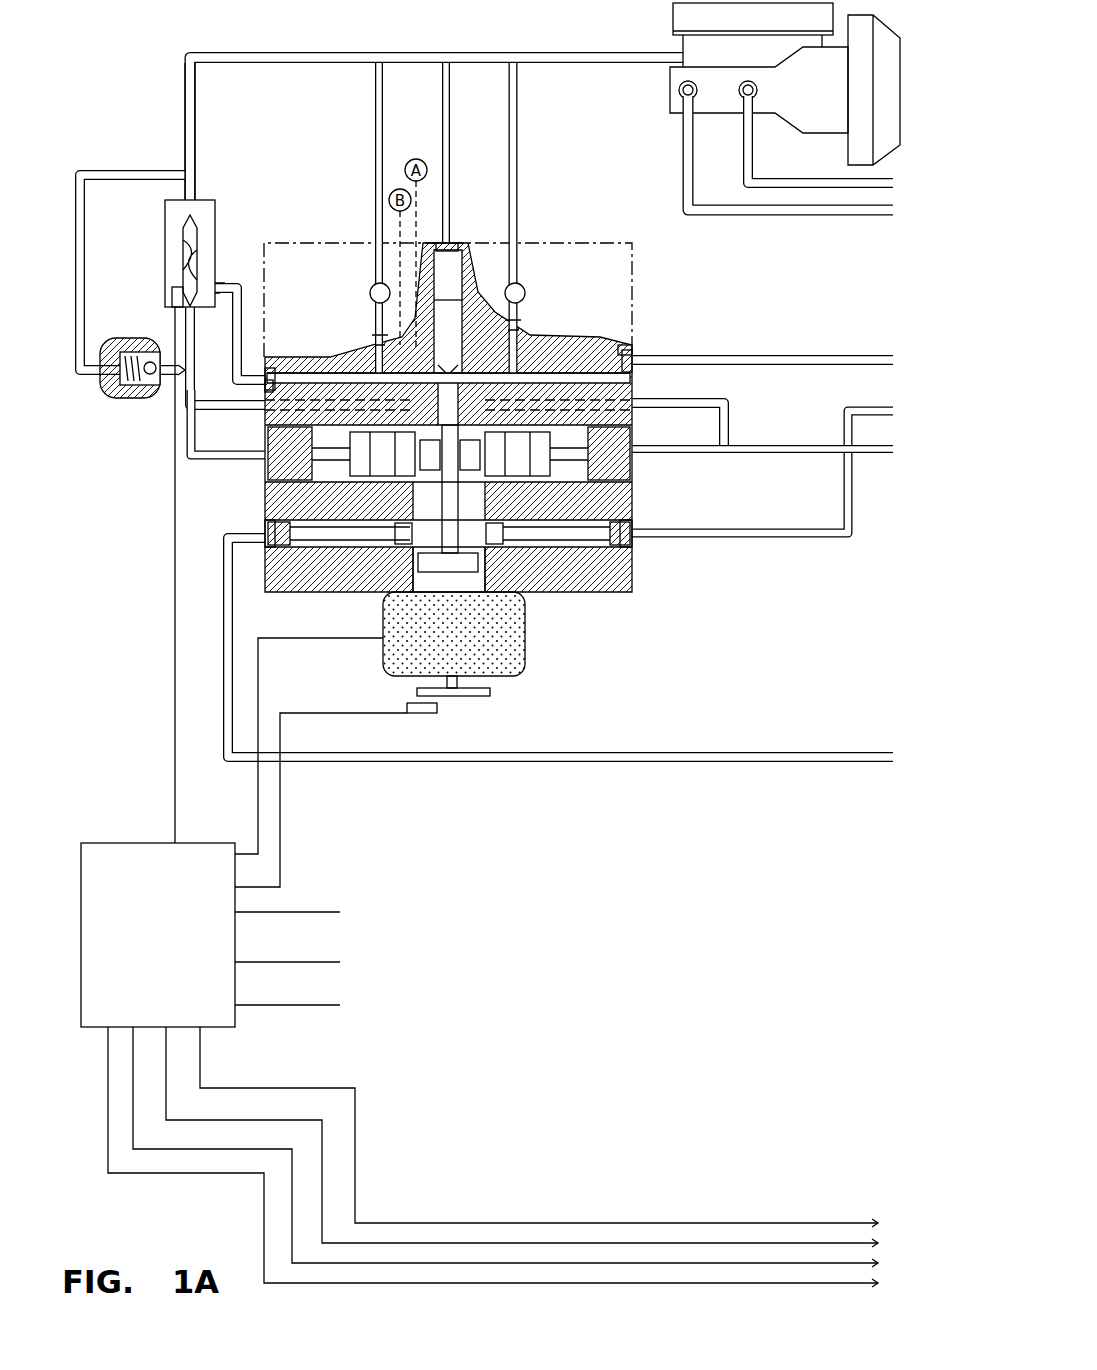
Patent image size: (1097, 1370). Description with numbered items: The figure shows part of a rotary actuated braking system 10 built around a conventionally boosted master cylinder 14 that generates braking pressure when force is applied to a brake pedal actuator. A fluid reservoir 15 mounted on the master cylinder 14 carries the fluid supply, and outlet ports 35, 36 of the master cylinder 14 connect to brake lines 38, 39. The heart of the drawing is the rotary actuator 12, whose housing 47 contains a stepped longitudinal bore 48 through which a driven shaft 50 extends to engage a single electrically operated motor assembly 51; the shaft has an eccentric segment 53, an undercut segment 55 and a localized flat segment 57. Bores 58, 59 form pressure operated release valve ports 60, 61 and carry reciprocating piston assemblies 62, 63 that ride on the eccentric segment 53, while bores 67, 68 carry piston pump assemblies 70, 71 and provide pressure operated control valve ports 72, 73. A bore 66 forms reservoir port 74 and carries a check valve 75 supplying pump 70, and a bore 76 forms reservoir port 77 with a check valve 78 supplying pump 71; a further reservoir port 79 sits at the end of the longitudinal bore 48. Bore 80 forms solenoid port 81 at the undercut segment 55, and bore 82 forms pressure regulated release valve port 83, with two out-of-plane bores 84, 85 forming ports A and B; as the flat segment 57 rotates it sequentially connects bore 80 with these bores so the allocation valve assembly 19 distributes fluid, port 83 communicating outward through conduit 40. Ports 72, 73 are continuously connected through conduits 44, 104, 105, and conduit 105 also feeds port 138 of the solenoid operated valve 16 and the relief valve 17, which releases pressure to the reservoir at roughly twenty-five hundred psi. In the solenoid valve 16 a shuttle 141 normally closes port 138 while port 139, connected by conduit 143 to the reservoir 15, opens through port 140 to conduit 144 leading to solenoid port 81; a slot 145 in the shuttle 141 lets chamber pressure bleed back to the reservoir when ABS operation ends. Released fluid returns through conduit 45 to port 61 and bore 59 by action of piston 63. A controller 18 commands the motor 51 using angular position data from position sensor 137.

The rotary actuated braking system 10 is at (138, 68).
The rotary actuator 12 is at (636, 594).
The master cylinder 14 is at (800, 107).
The fluid reservoir 15 is at (683, 20).
The solenoid operated valve 16 is at (215, 203).
The relief valve 17 is at (128, 398).
The controller 18 is at (127, 852).
The allocation valve assembly 19 is at (482, 379).
The outlet port 35 is at (742, 98).
The outlet port 36 is at (679, 92).
The brake line 38 is at (842, 188).
The brake line 39 is at (793, 216).
The conduit 40 is at (872, 355).
The conduit 44 is at (883, 455).
The conduit 45 is at (868, 406).
The housing 47 is at (598, 580).
The stepped longitudinal bore 48 is at (418, 490).
The driven shaft 50 is at (470, 490).
The electrically operated motor assembly 51 is at (525, 655).
The eccentric segment 53 is at (478, 505).
The undercut segment 55 is at (460, 372).
The localized flat segment 57 is at (462, 340).
The bore 58 is at (292, 545).
The bore 59 is at (628, 545).
The pressure operated release valve port 60 is at (270, 545).
The pressure operated release valve port 61 is at (634, 540).
The reciprocating piston assembly 62 is at (365, 549).
The reciprocating piston assembly 63 is at (548, 549).
The bore 66 is at (378, 335).
The bore 67 is at (315, 465).
The bore 68 is at (626, 470).
The piston pump assembly 70 is at (298, 465).
The piston pump assembly 71 is at (630, 462).
The pressure operated control valve port 72 is at (266, 452).
The pressure operated control valve port 73 is at (630, 455).
The reservoir port 74 is at (375, 235).
The check valve 75 is at (370, 290).
The bore 76 is at (520, 320).
The reservoir port 77 is at (516, 235).
The check valve 78 is at (525, 292).
The reservoir port 79 is at (448, 243).
The bore 80 is at (276, 372).
The solenoid port 81 is at (265, 386).
The bore 82 is at (622, 352).
The pressure regulated release valve port 83 is at (632, 346).
The bore 84 is at (418, 203).
The bore 85 is at (378, 205).
The conduit 104 is at (700, 383).
The conduit 105 is at (256, 455).
The position sensor 137 is at (437, 708).
The port 138 is at (185, 325).
The port 139 is at (198, 198).
The port 140 is at (226, 284).
The shuttle 141 is at (185, 230).
The conduit 143 is at (185, 100).
The conduit 144 is at (242, 300).
The slot 145 is at (185, 310).